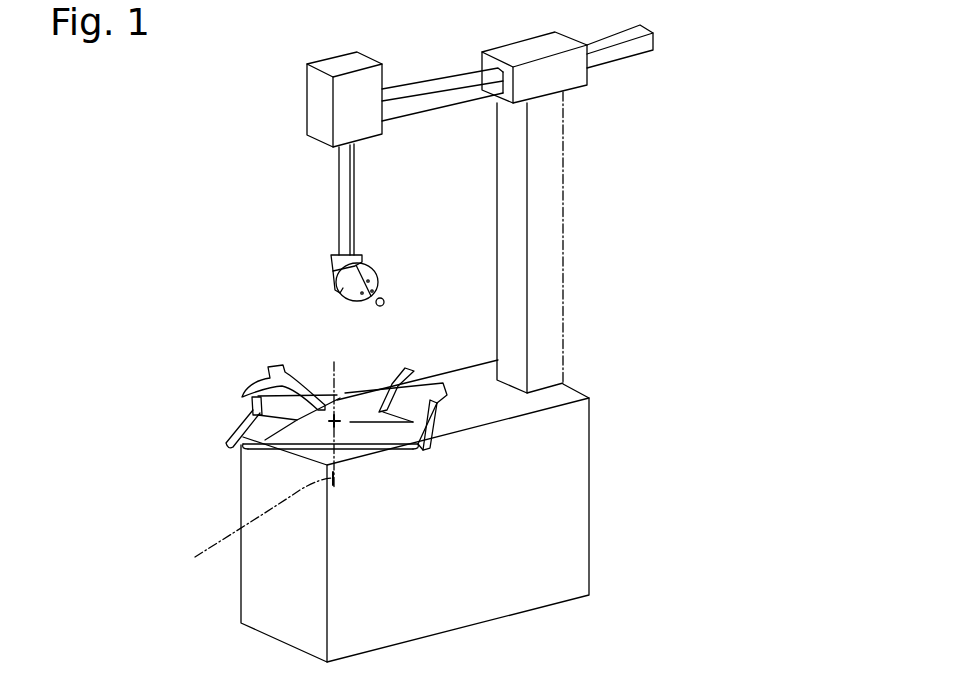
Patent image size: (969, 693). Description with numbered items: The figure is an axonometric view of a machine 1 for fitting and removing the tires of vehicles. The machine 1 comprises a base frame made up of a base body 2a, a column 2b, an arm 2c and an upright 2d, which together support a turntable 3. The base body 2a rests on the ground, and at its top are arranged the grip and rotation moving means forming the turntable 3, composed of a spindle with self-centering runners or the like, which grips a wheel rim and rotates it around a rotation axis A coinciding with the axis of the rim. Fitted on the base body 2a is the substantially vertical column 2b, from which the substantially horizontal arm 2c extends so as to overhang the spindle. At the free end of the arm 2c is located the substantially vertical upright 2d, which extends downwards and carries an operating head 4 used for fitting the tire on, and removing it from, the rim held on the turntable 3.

The machine 1 is at (818, 128).
The base body 2a is at (505, 520).
The column 2b is at (537, 215).
The arm 2c is at (443, 92).
The upright 2d is at (345, 180).
The turntable 3 is at (252, 398).
The operating head 4 is at (306, 252).
The rotation axis A is at (258, 468).